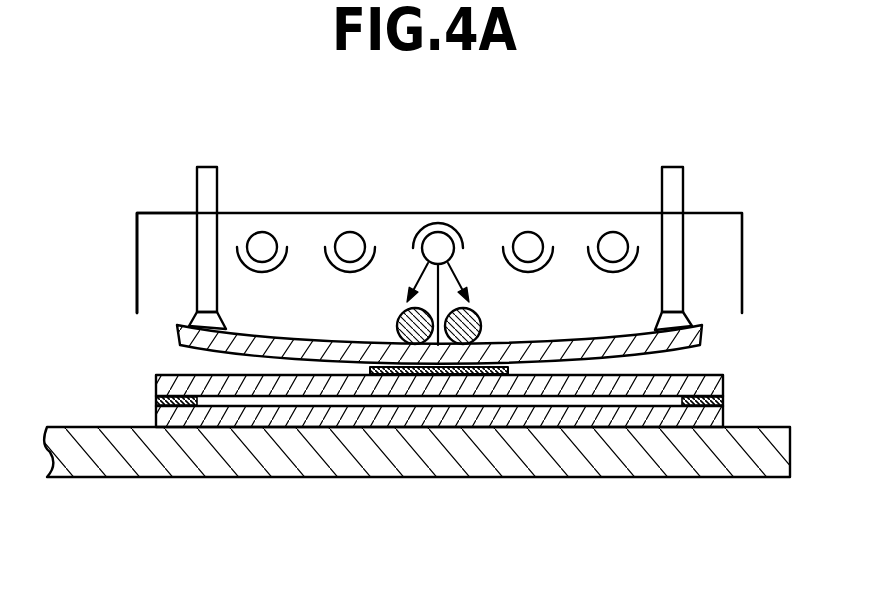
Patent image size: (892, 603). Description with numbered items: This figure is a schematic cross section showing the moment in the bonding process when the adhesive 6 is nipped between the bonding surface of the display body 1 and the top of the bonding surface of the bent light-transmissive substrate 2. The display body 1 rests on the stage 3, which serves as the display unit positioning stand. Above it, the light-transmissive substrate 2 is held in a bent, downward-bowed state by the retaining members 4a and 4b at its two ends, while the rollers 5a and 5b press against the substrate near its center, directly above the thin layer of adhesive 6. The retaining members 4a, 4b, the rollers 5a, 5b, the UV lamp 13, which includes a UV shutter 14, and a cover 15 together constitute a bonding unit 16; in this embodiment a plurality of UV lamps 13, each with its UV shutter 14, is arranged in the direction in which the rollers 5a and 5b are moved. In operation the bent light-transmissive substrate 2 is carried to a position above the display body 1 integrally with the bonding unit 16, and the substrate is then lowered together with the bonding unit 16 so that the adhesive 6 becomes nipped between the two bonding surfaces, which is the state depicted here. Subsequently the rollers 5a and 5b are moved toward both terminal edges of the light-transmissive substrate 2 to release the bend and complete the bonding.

The display body 1 is at (157, 359).
The light-transmissive substrate 2 is at (705, 333).
The stage 3 is at (227, 470).
The retaining member 4a is at (208, 165).
The retaining member 4b is at (673, 165).
The roller 5a is at (398, 312).
The roller 5b is at (479, 311).
The adhesive 6 is at (400, 374).
The UV lamp 13 is at (444, 233).
The UV shutter 14 is at (430, 232).
The cover 15 is at (161, 212).
The bonding unit 16 is at (510, 199).